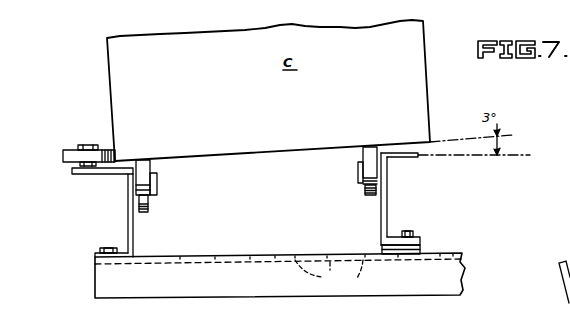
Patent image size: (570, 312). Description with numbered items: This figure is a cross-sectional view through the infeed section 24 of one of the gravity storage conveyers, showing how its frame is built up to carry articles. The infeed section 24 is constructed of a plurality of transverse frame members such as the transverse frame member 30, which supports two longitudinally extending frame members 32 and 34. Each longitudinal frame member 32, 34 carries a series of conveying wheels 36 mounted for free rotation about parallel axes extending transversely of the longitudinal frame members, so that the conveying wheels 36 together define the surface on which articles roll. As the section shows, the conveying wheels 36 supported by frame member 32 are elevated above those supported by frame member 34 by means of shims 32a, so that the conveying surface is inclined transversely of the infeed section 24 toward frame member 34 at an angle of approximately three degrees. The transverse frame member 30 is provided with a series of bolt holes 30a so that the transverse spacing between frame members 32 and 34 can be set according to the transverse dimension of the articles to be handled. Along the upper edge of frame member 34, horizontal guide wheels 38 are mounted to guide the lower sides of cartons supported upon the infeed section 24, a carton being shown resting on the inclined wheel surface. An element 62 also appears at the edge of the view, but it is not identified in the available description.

The infeed section 24 is at (458, 222).
The transverse frame member 30 is at (253, 268).
The bolt holes 30a is at (329, 275).
The longitudinal frame member 32 is at (388, 200).
The shims 32a is at (382, 250).
The longitudinal frame member 34 is at (133, 233).
The conveying wheels 36 is at (152, 206).
The horizontal guide wheels 38 is at (65, 162).
The guide bar 62 is at (559, 286).